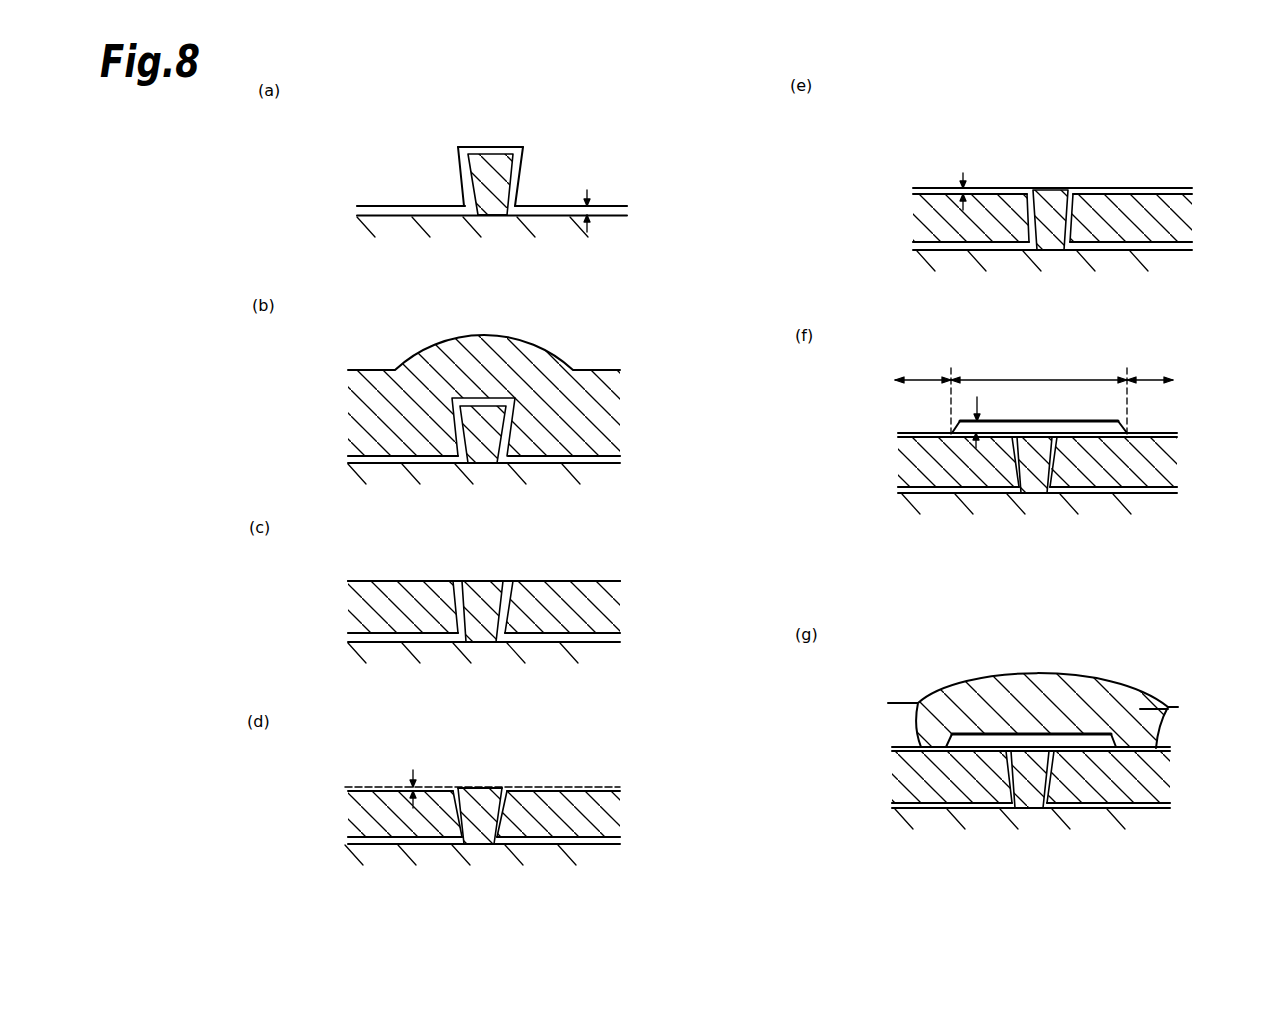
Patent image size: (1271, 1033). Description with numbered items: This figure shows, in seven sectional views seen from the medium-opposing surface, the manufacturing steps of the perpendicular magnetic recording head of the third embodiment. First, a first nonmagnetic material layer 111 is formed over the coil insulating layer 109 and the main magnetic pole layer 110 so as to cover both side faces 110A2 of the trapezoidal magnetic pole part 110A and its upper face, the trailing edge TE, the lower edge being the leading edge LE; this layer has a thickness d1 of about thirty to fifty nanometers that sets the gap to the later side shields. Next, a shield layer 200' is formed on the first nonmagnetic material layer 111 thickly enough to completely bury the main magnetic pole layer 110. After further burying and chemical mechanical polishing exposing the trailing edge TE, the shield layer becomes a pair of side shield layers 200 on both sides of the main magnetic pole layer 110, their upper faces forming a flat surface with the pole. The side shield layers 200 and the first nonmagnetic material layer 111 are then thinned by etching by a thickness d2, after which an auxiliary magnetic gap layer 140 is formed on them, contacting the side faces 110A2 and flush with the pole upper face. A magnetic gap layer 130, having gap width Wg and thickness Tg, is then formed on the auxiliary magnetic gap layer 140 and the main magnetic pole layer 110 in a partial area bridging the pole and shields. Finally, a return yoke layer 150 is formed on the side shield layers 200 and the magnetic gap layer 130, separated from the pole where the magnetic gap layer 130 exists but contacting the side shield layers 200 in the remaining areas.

The coil insulating layer 109 is at (613, 228).
The first nonmagnetic material layer 111 is at (613, 212).
The main magnetic pole layer 110 is at (487, 195).
The magnetic pole part 110A is at (490, 176).
The side faces 110A2 is at (463, 185).
The trailing edge TE is at (497, 150).
The leading edge LE is at (492, 217).
The thickness d1 is at (588, 203).
The thickness d2 is at (412, 773).
The shield layer 200' is at (484, 387).
The side shield layers 200 is at (773, 515).
The auxiliary magnetic gap layer 140 is at (987, 188).
The magnetic gap layer 130 is at (1098, 423).
The thickness Tg is at (958, 432).
The gap width Wg is at (1039, 404).
The return yoke layer 150 is at (993, 712).